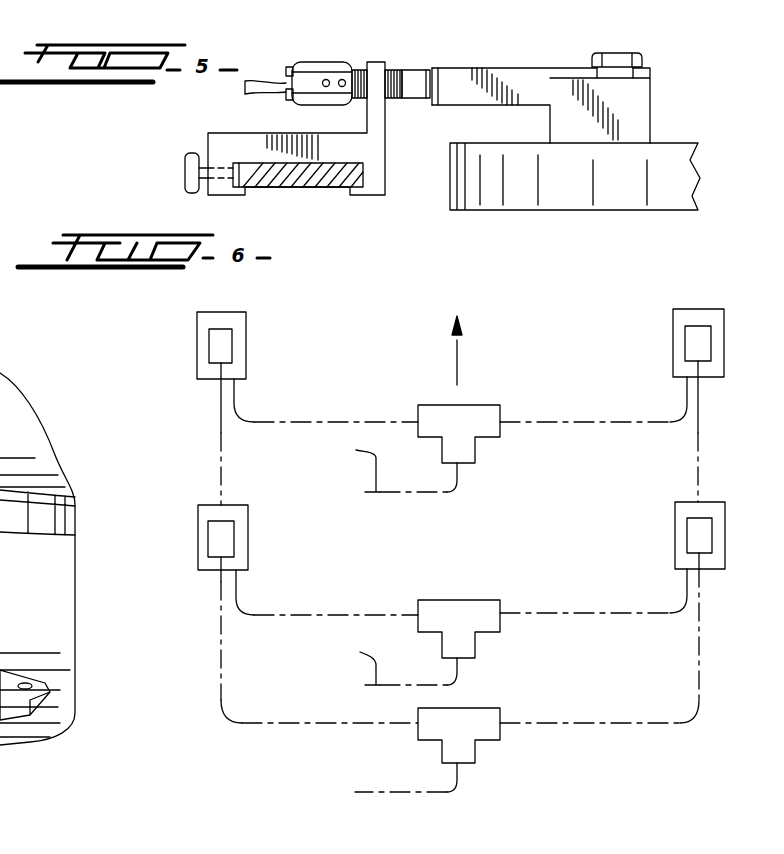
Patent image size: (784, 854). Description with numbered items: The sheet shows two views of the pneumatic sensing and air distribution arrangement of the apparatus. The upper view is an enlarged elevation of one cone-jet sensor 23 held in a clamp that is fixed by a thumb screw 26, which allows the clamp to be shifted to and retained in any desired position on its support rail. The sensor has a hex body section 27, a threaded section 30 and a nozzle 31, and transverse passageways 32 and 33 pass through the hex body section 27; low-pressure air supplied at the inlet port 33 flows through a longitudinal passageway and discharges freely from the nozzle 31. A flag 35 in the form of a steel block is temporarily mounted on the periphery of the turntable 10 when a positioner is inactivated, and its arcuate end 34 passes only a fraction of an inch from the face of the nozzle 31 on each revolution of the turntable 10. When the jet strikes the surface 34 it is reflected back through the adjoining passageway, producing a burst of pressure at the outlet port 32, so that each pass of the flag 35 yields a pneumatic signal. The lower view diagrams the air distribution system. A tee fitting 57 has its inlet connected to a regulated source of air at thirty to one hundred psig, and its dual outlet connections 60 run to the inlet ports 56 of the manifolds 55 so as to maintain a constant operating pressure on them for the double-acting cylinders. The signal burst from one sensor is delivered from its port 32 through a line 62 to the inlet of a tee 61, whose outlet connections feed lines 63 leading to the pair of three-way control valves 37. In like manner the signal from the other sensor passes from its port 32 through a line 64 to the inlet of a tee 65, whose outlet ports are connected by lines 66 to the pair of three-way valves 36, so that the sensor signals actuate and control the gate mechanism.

In FIG. 5, the turntable 10 is at (490, 143).
In FIG. 5, the cone-jet sensor 23 is at (340, 60).
In FIG. 5, the thumb screw 26 is at (185, 170).
In FIG. 5, the hex body section 27 is at (310, 62).
In FIG. 5, the threaded section 30 is at (396, 70).
In FIG. 5, the nozzle 31 is at (420, 70).
In FIG. 5, the transverse passageway (outlet port) 32 is at (324, 87).
In FIG. 5, the transverse passageway (air inlet port) 33 is at (342, 87).
In FIG. 5, the arcuate end 34 is at (434, 105).
In FIG. 5, the flag 35 is at (503, 68).
In FIG. 6, the three-way valve 36 is at (248, 560).
In FIG. 6, the three-way valve 37 is at (246, 355).
In FIG. 6, the manifold 55 is at (222, 480).
In FIG. 6, the inlet port 56 is at (222, 558).
In FIG. 6, the tee fitting 57 is at (478, 708).
In FIG. 6, the outlet connection 60 is at (222, 690).
In FIG. 6, the tee fitting 61 is at (475, 405).
In FIG. 6, the line 62 is at (393, 464).
In FIG. 6, the line 63 is at (352, 420).
In FIG. 6, the line 64 is at (397, 659).
In FIG. 6, the tee fitting 65 is at (482, 600).
In FIG. 6, the line 66 is at (346, 615).